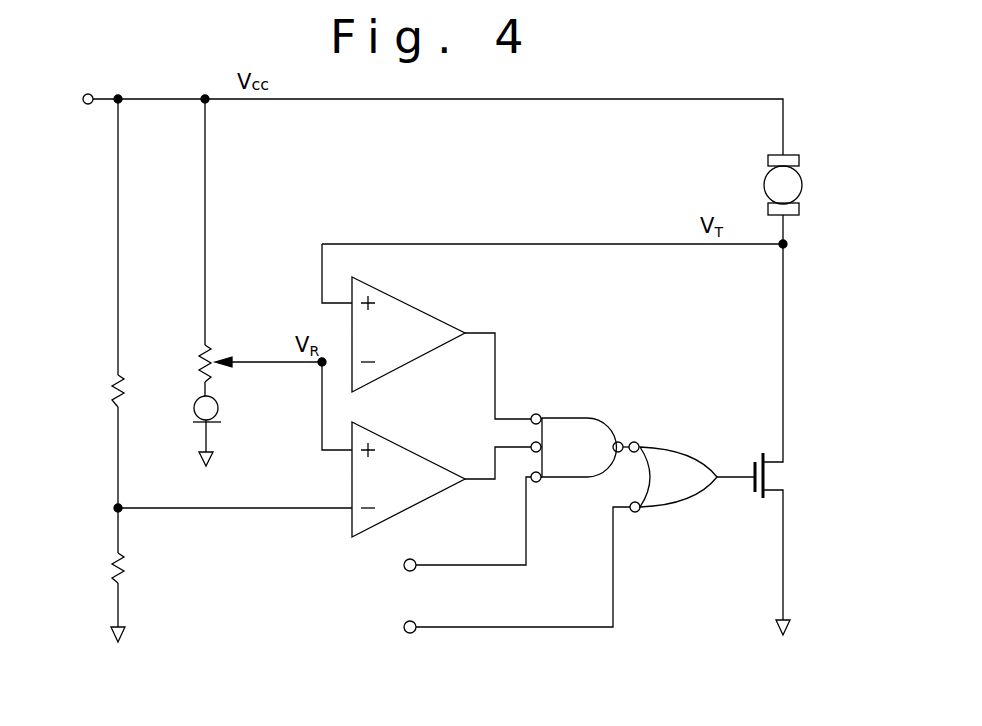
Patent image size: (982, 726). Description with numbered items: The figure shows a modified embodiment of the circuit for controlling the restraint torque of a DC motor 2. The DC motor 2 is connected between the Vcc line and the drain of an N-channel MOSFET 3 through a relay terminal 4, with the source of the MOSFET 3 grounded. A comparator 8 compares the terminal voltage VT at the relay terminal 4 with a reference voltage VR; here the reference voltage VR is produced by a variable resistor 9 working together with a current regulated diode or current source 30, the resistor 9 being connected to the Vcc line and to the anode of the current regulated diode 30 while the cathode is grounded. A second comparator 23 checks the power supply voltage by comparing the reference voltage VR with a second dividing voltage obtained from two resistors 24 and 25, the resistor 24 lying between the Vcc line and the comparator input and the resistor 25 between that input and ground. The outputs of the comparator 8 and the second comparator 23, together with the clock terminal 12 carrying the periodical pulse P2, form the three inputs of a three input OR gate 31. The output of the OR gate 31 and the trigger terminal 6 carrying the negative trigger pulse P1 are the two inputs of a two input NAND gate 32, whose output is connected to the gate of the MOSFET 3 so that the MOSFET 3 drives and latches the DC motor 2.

The DC motor 2 is at (763, 186).
The N-channel MOSFET 3 is at (776, 480).
The relay terminal 4 is at (781, 247).
The input terminal 6 is at (413, 622).
The comparator 8 is at (440, 317).
The variable resistor 9 is at (212, 348).
The clock terminal 12 is at (412, 561).
The second comparator 23 is at (438, 461).
The resistor 24 is at (118, 398).
The resistor 25 is at (118, 570).
The current regulated diode 30 is at (219, 410).
The three input OR gate 31 is at (586, 418).
The two input NAND gate 32 is at (683, 447).